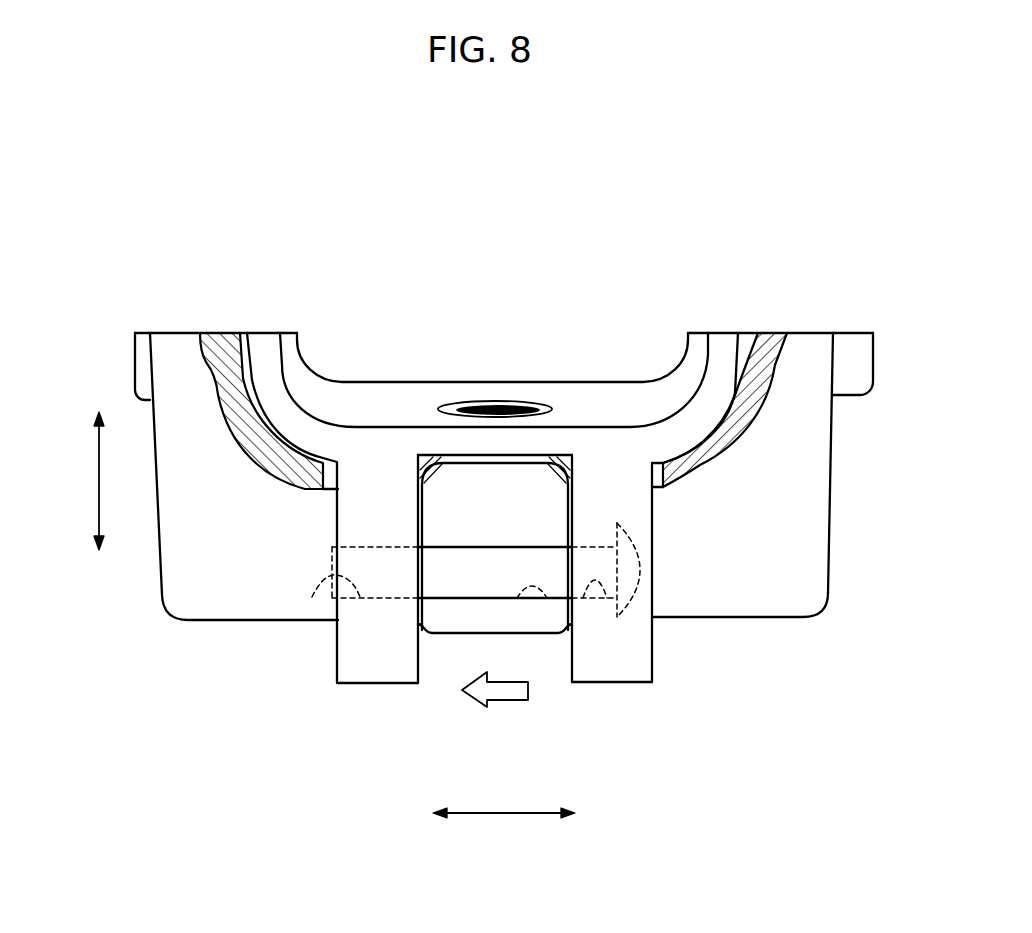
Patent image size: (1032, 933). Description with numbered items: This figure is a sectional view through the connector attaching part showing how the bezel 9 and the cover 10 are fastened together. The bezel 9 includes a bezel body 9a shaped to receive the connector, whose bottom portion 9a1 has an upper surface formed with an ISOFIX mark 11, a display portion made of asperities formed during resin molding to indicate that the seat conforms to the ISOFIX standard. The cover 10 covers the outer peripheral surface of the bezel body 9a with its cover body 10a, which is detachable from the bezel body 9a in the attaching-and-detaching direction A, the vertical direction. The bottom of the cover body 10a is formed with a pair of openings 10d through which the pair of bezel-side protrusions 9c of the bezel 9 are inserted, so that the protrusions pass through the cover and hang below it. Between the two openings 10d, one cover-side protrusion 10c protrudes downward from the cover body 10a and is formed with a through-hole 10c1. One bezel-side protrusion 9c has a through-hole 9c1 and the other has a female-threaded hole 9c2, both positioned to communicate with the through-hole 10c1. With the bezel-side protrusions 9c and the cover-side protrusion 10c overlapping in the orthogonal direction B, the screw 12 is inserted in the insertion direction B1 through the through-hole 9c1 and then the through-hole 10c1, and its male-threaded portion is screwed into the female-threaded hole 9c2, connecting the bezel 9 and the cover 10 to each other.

The bezel 9 is at (492, 522).
The bezel body 9a is at (492, 328).
The bottom portion 9a1 is at (403, 392).
The bezel-side protrusion 9c is at (450, 678).
The through-hole 9c1 is at (583, 600).
The female-threaded hole 9c2 is at (312, 597).
The cover 10 is at (519, 557).
The cover body 10a is at (258, 457).
The cover-side protrusion 10c is at (491, 618).
The through-hole 10c1 is at (548, 600).
The opening 10d is at (325, 500).
The ISOFIX mark 11 is at (498, 368).
The screw 12 is at (663, 618).
The attaching-and-detaching direction A is at (99, 475).
The orthogonal direction B is at (505, 817).
The insertion direction B1 is at (502, 700).